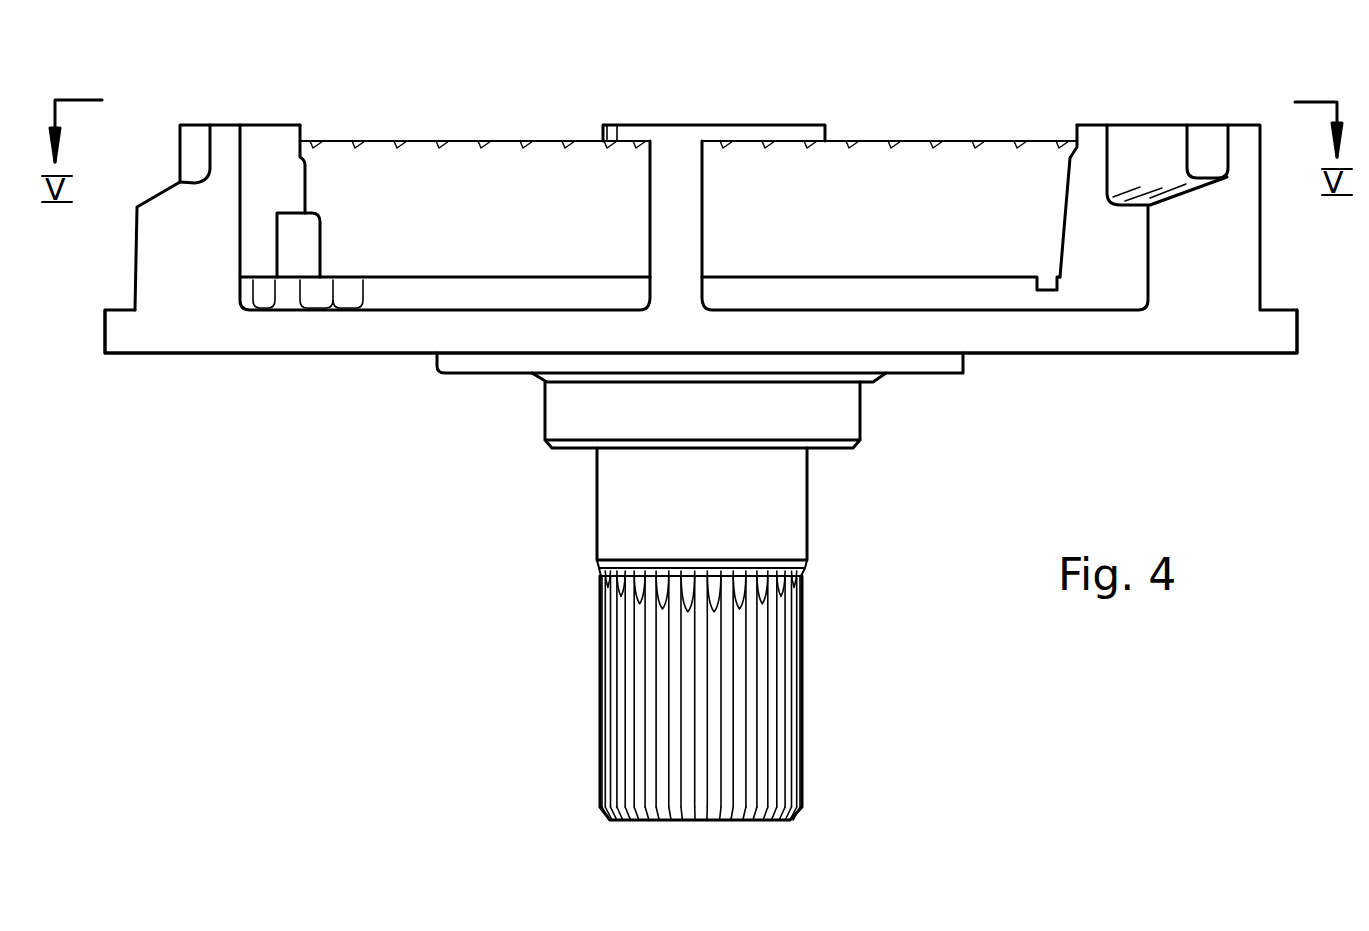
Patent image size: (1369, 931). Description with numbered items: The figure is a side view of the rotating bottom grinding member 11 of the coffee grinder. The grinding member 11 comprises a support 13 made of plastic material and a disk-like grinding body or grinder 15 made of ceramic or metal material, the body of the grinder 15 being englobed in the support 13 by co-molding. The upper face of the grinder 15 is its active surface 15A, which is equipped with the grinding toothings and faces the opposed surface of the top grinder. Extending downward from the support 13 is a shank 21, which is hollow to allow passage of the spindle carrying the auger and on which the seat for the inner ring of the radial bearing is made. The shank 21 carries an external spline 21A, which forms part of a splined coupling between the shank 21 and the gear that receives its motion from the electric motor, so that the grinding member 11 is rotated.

The second grinding member 11 is at (455, 433).
The support 13 is at (1159, 362).
The grinder 15 is at (988, 173).
The active surface 15A is at (878, 138).
The shank 21 is at (822, 540).
The external spline 21A is at (768, 678).